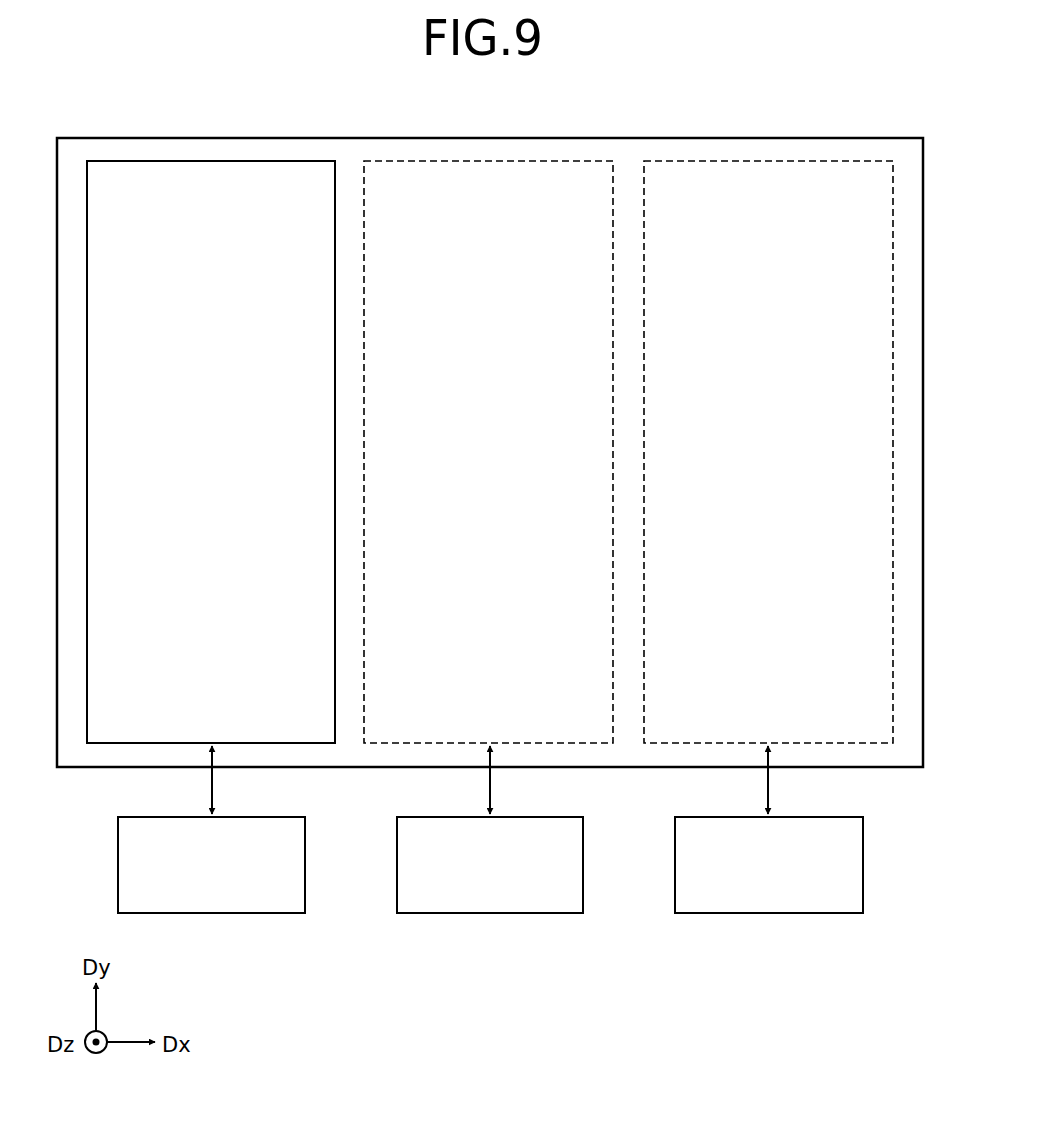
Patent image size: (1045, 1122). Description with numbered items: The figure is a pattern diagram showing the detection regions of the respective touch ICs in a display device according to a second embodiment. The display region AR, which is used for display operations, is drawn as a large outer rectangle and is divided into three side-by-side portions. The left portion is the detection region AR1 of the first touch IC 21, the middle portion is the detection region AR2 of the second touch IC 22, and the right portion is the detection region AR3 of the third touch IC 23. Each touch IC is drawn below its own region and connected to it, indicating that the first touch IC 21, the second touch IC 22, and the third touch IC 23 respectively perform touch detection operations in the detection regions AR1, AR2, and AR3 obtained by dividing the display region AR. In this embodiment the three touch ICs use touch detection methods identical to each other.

The display region AR is at (634, 137).
The detection region AR1 is at (222, 160).
The detection region AR2 is at (503, 160).
The detection region AR3 is at (783, 160).
The first touch IC 21 is at (258, 816).
The second touch IC 22 is at (528, 816).
The third touch IC 23 is at (816, 816).